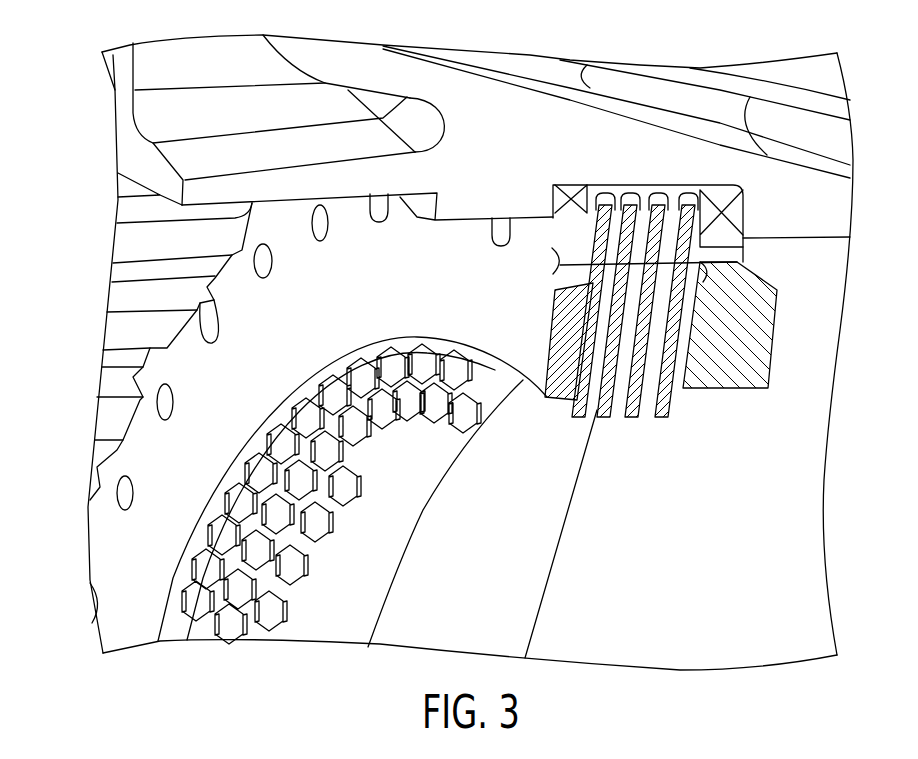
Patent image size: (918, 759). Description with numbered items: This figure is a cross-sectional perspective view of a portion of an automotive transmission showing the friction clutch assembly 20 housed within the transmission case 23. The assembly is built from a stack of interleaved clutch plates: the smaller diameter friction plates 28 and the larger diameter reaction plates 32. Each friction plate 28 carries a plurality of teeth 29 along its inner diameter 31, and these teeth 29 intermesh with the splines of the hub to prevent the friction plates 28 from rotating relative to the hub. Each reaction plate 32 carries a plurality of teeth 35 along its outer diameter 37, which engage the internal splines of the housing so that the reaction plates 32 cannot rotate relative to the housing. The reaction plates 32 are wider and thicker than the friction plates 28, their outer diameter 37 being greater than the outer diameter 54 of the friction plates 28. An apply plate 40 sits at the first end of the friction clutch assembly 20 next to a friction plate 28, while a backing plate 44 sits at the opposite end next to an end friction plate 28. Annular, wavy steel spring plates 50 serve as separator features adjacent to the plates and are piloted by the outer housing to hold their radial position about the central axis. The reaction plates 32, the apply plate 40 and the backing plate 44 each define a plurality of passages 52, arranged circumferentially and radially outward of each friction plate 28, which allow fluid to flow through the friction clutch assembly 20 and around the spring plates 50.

The friction clutch assembly 20 is at (82, 421).
The transmission case 23 is at (473, 117).
The friction plates 28 is at (710, 332).
The teeth 29 is at (300, 628).
The inner diameter 31 is at (395, 465).
The reaction plates 32 is at (637, 176).
The teeth 35 is at (605, 200).
The outer diameter 37 is at (638, 193).
The apply plate 40 is at (93, 572).
The backing plate 44 is at (768, 313).
The spring plates 50 is at (562, 184).
The passages 52 is at (322, 235).
The outer diameter 54 is at (733, 247).